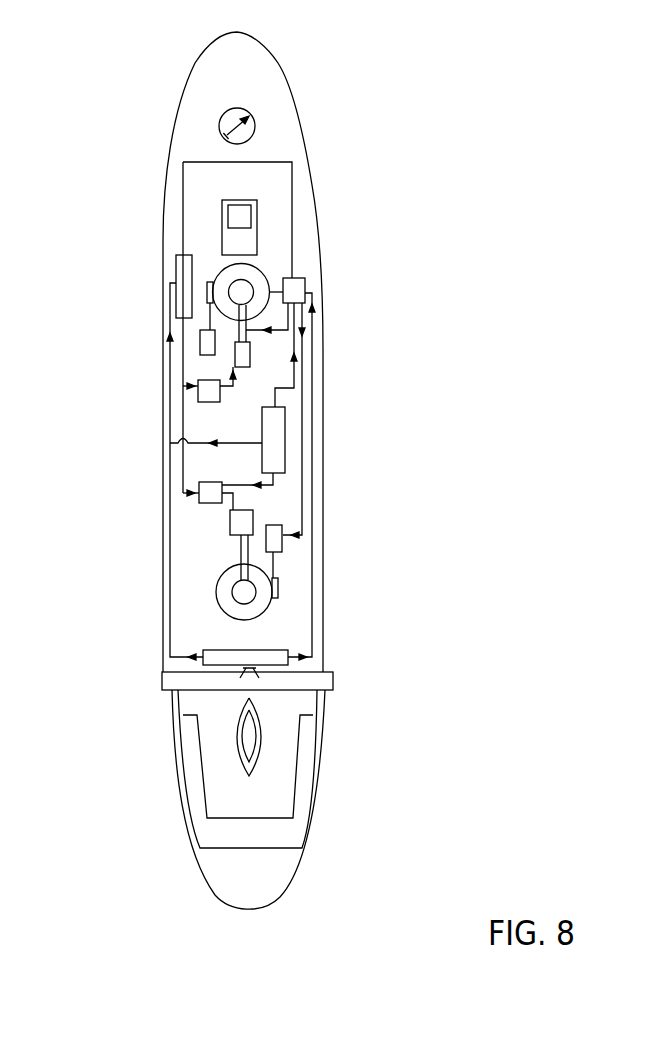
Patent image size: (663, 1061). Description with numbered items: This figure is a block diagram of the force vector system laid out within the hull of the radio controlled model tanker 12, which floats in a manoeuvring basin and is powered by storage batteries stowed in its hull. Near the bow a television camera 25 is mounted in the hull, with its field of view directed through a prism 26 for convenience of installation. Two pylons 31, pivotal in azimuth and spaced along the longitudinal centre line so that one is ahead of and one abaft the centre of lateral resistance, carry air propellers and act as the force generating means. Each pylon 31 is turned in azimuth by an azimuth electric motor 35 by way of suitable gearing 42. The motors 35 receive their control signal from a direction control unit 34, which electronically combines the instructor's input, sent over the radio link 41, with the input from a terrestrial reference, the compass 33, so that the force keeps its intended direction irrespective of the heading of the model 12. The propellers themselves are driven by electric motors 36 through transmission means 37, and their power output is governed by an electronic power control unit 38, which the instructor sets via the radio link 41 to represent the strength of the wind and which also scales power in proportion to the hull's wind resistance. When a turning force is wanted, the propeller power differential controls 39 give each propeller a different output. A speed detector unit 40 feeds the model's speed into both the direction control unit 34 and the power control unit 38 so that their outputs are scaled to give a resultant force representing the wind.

The model tanker 12 is at (193, 138).
The television camera 25 is at (240, 240).
The prism 26 is at (240, 220).
The pylon 31 is at (242, 290).
The compass 33 is at (230, 120).
The direction control unit 34 is at (296, 293).
The azimuth electric motor 35 is at (208, 343).
The electric motor 36 is at (240, 355).
The transmission means 37 is at (240, 289).
The power control unit 38 is at (183, 272).
The propeller power differential control 39 is at (210, 393).
The speed detector unit 40 is at (237, 658).
The radio link 41 is at (275, 449).
The gearing 42 is at (207, 294).